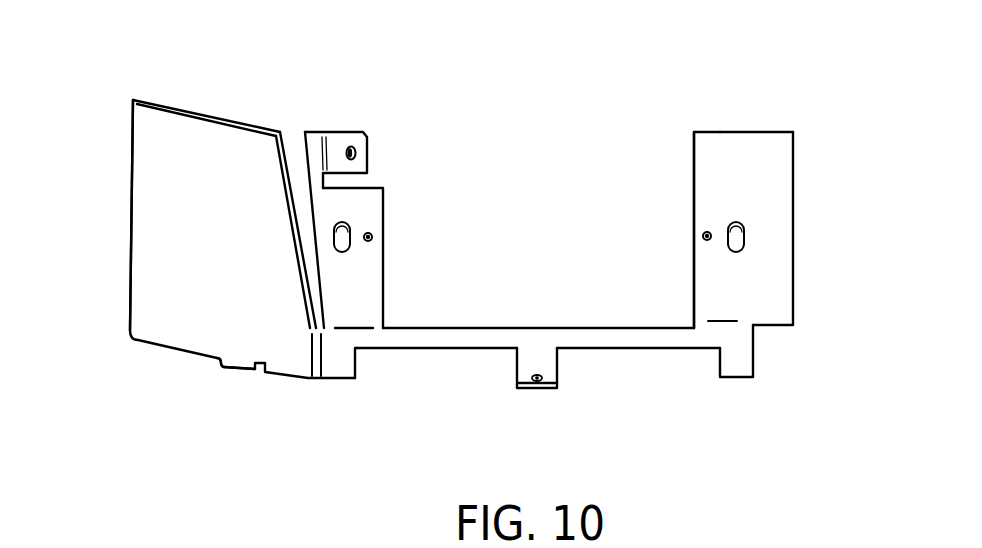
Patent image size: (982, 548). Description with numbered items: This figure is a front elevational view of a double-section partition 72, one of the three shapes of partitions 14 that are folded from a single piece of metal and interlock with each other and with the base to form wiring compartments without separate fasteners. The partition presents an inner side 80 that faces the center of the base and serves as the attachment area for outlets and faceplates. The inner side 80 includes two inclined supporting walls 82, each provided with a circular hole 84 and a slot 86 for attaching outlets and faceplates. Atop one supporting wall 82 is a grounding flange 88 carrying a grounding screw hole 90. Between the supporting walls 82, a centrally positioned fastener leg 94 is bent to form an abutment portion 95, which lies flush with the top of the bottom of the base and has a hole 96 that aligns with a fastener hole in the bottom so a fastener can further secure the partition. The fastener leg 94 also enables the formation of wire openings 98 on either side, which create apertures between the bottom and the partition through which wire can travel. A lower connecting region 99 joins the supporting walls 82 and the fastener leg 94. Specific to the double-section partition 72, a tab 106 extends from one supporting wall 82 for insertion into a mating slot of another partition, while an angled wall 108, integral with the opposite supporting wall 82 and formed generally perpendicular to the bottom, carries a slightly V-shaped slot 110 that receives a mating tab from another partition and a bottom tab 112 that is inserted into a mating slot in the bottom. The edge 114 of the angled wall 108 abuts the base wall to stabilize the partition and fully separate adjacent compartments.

The partition 14 is at (144, 92).
The double-section partition 72 is at (721, 131).
The inner side 80 is at (697, 128).
The supporting wall 82 is at (365, 292).
The circular hole 84 is at (372, 237).
The slot 86 is at (350, 244).
The grounding flange 88 is at (352, 132).
The grounding screw hole 90 is at (357, 153).
The fastener leg 94 is at (567, 361).
The abutment portion 95 is at (507, 379).
The hole 96 is at (537, 385).
The wire opening 98 is at (360, 370).
The base plate 99 is at (532, 326).
The tab 106 is at (810, 175).
The angled wall 108 is at (177, 318).
The slot 110 is at (293, 128).
The bottom tab 112 is at (240, 370).
The edge 114 is at (127, 220).